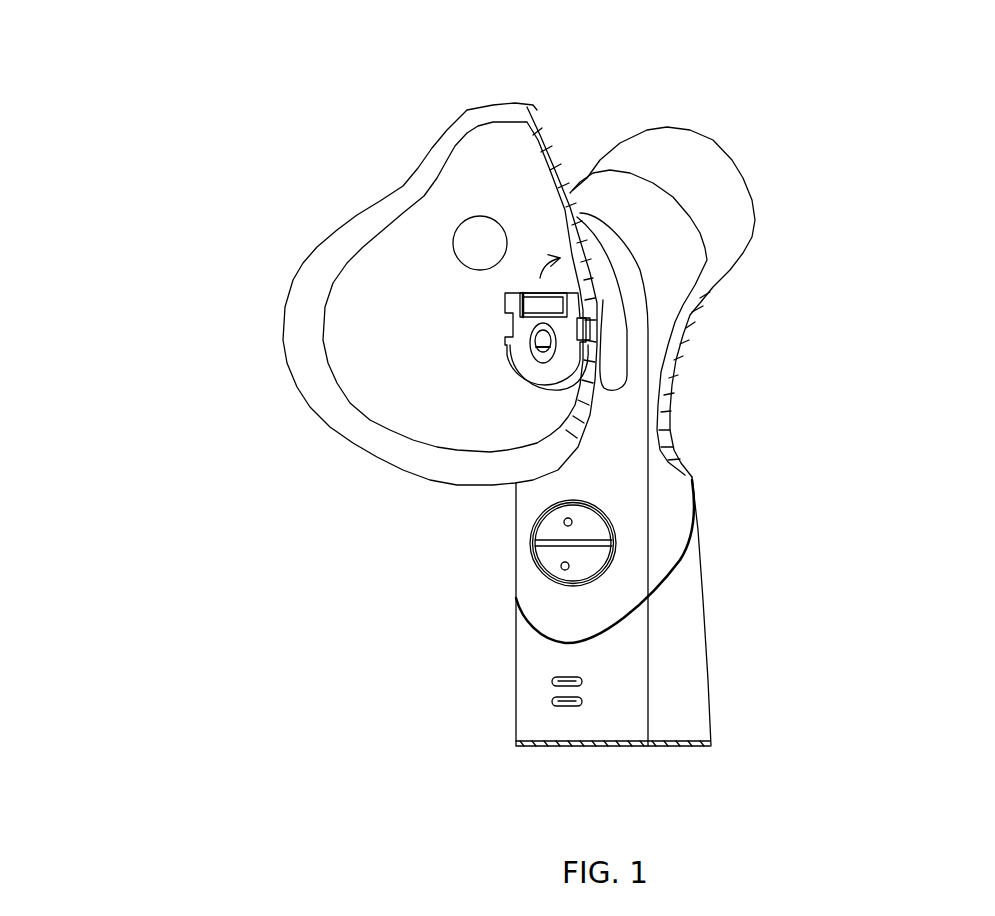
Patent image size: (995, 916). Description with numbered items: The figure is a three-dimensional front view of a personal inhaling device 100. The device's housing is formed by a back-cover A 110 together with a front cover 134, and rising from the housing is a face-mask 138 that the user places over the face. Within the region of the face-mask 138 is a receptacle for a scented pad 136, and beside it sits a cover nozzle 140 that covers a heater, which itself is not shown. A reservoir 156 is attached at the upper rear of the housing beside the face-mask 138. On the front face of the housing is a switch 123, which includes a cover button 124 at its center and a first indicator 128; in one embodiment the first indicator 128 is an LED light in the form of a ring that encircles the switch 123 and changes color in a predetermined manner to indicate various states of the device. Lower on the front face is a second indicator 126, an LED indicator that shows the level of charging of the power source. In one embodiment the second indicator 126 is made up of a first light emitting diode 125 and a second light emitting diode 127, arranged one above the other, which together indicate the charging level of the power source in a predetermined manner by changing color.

The personal inhaling device 100 is at (3, 10).
The back-cover A 110 is at (673, 666).
The switch 123 is at (617, 517).
The cover button 124 is at (560, 524).
The first light emitting diode 125 is at (583, 680).
The second indicator 126 is at (540, 692).
The second light emitting diode 127 is at (583, 702).
The first indicator 128 is at (536, 563).
The front cover 134 is at (534, 737).
The receptacle for a scented pad 136 is at (527, 296).
The face-mask 138 is at (360, 318).
The cover nozzle 140 is at (507, 304).
The reservoir 156 is at (707, 201).